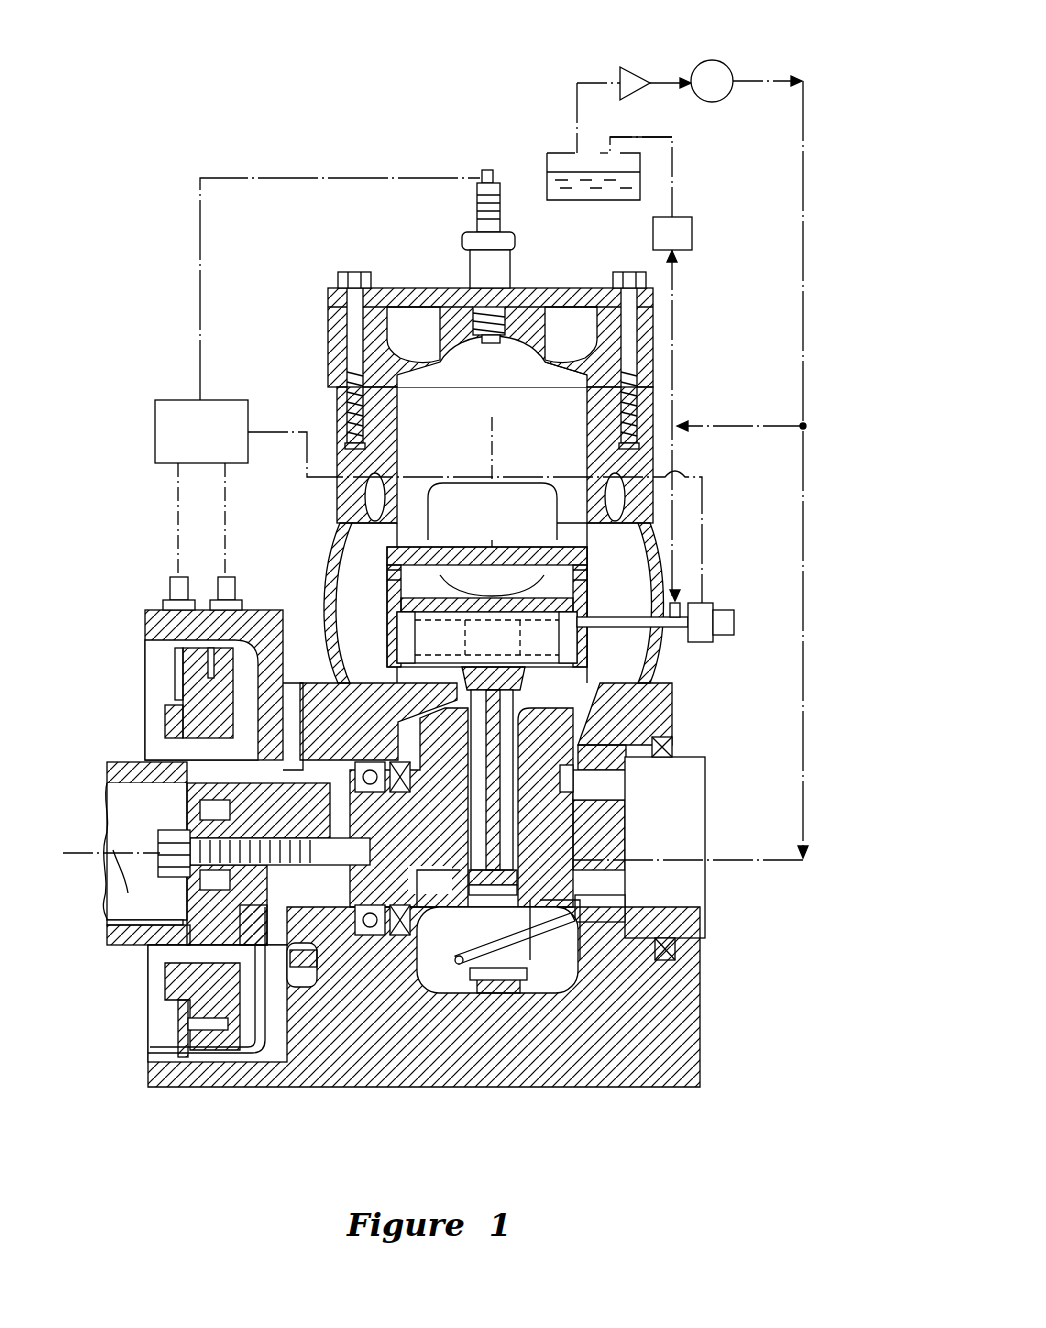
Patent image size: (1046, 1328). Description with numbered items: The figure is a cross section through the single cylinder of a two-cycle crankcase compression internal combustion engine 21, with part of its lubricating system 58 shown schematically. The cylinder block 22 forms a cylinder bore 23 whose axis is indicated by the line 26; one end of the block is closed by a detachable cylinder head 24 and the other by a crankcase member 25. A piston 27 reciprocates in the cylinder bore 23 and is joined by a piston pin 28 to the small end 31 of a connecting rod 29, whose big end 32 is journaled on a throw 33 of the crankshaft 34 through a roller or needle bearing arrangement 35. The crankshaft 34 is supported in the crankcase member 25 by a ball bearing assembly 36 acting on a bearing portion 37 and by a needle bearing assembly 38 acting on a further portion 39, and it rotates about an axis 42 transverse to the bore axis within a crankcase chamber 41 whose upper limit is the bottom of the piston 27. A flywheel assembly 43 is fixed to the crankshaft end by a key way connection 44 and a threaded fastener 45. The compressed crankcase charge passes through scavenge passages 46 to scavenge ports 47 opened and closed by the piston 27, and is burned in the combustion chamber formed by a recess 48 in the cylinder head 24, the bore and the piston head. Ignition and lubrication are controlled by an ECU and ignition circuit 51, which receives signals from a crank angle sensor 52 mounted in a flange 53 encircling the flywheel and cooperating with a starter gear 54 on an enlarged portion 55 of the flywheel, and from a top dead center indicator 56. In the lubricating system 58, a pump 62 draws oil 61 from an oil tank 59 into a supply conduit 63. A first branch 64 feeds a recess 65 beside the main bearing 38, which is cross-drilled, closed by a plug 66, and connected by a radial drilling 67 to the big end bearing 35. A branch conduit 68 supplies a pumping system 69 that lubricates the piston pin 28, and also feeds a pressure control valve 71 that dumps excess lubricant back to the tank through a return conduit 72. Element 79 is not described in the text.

The internal combustion engine 21 is at (208, 138).
The cylinder block 22 is at (330, 402).
The cylinder bore 23 is at (457, 400).
The cylinder head 24 is at (657, 327).
The crankcase member 25 is at (676, 1040).
The cylinder bore axis 26 is at (487, 443).
The piston 27 is at (520, 541).
The piston pin 28 is at (564, 647).
The connecting rod 29 is at (508, 820).
The connecting rod small end 31 is at (481, 565).
The connecting rod big end 32 is at (532, 1000).
The crankshaft throw 33 is at (402, 960).
The crankshaft 34 is at (709, 921).
The roller or needle type bearing arrangement 35 is at (495, 996).
The ball bearing assembly 36 is at (352, 950).
The bearing portion of the crankshaft 37 is at (382, 950).
The needle bearing assembly 38 is at (615, 908).
The further portion of the crankshaft 39 is at (620, 843).
The crankcase chamber 41 is at (565, 1000).
The crankshaft axis 42 is at (216, 864).
The flywheel assembly 43 is at (162, 720).
The key way connection 44 is at (150, 775).
The threaded fastener 45 is at (160, 846).
The scavenge passages 46 is at (348, 586).
The scavenge ports 47 is at (548, 326).
The recess 48 is at (493, 248).
The ECU and ignition circuit 51 is at (155, 420).
The crank angle sensor 52 is at (173, 585).
The flange 53 is at (145, 625).
The starter gear 54 is at (175, 650).
The enlarged portion of the flywheel 55 is at (195, 687).
The top dead center indicator 56 is at (236, 585).
The lubricating system 58 is at (598, 63).
The oil tank 59 is at (545, 162).
The oil 61 is at (603, 195).
The pump 62 is at (722, 90).
The supply conduit 63 is at (805, 285).
The first branch conduit 64 is at (790, 868).
The recess and cross-drilling 65 is at (565, 972).
The plug 66 is at (455, 960).
The radially extending drilling 67 is at (461, 807).
The branch conduit 68 is at (753, 426).
The pumping system 69 is at (727, 607).
The pressure control valve 71 is at (693, 235).
The return conduit 72 is at (673, 160).
The cylinder flange 79 is at (356, 548).